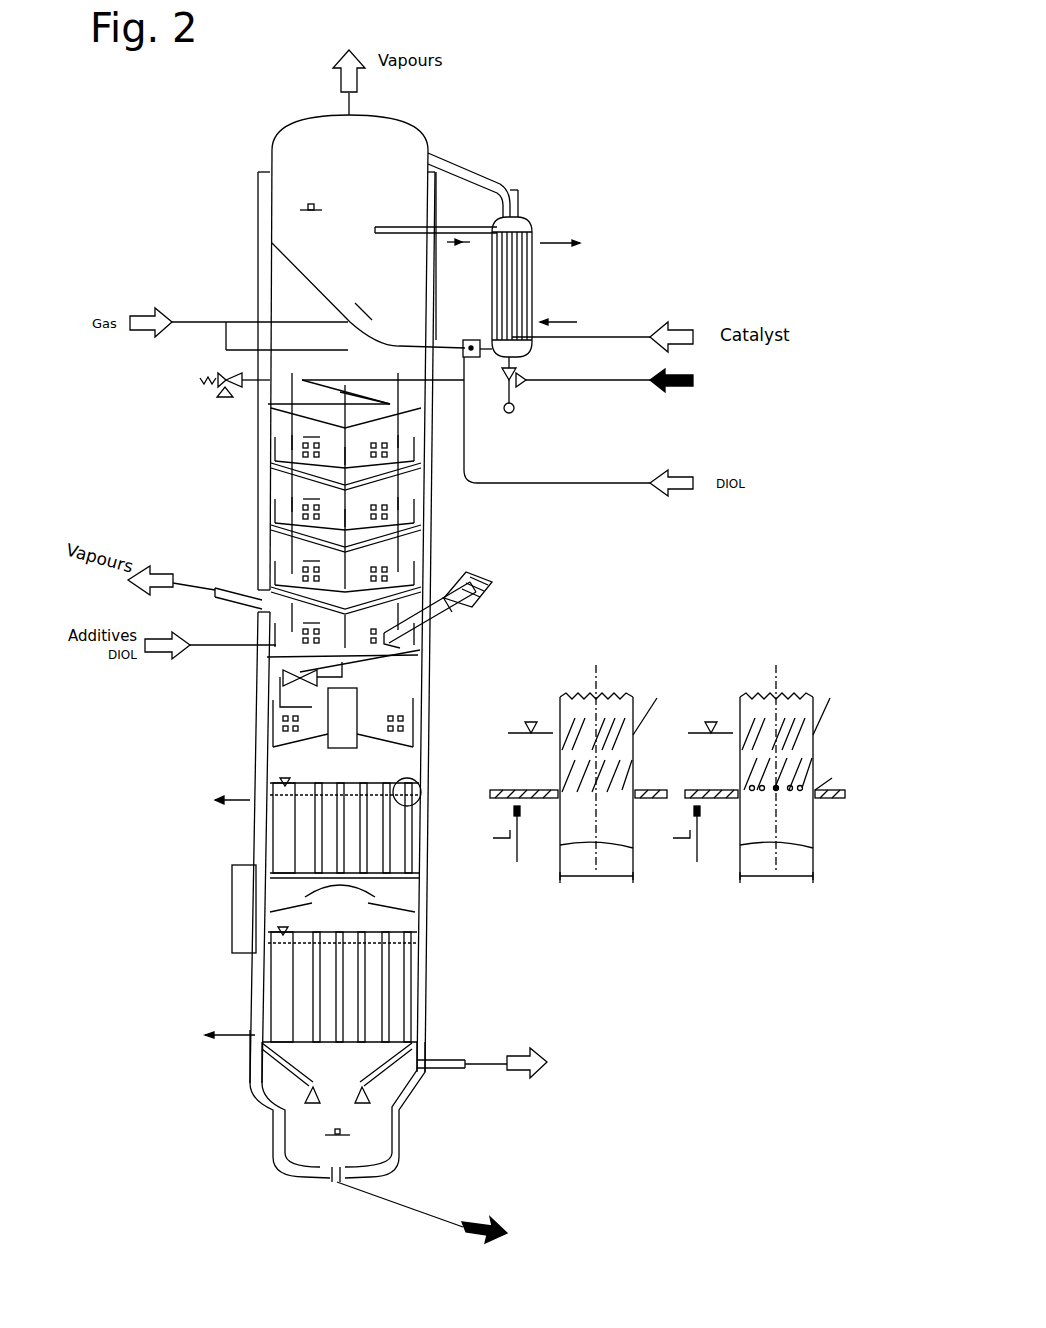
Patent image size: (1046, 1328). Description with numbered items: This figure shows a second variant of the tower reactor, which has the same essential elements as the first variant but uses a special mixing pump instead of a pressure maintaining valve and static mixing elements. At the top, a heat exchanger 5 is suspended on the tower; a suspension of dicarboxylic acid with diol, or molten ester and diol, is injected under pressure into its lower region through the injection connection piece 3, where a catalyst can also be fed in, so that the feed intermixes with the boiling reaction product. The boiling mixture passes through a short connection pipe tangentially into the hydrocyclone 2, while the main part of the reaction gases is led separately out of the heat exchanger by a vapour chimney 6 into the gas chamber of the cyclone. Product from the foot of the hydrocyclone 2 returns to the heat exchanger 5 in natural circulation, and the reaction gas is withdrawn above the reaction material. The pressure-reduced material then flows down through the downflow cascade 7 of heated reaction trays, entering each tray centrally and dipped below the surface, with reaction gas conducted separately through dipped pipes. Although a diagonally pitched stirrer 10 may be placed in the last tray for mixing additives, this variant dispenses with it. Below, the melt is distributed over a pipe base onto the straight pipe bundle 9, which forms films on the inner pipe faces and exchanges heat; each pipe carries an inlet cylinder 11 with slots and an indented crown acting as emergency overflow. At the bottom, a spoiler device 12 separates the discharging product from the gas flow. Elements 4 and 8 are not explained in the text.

The hydrocyclone 2 is at (292, 197).
The injection connection piece 3 is at (520, 386).
The spray distributor 4 is at (268, 405).
The heat exchanger 5 is at (530, 268).
The vapour chimney 6 is at (505, 188).
The downflow cascade 7 is at (437, 527).
The mixing zone 8 is at (272, 738).
The straight pipe bundle 9 is at (295, 825).
The diagonally pitched stirrer 10 is at (470, 608).
The inlet cylinder 11 is at (740, 770).
The spoiler device 12 is at (390, 1095).